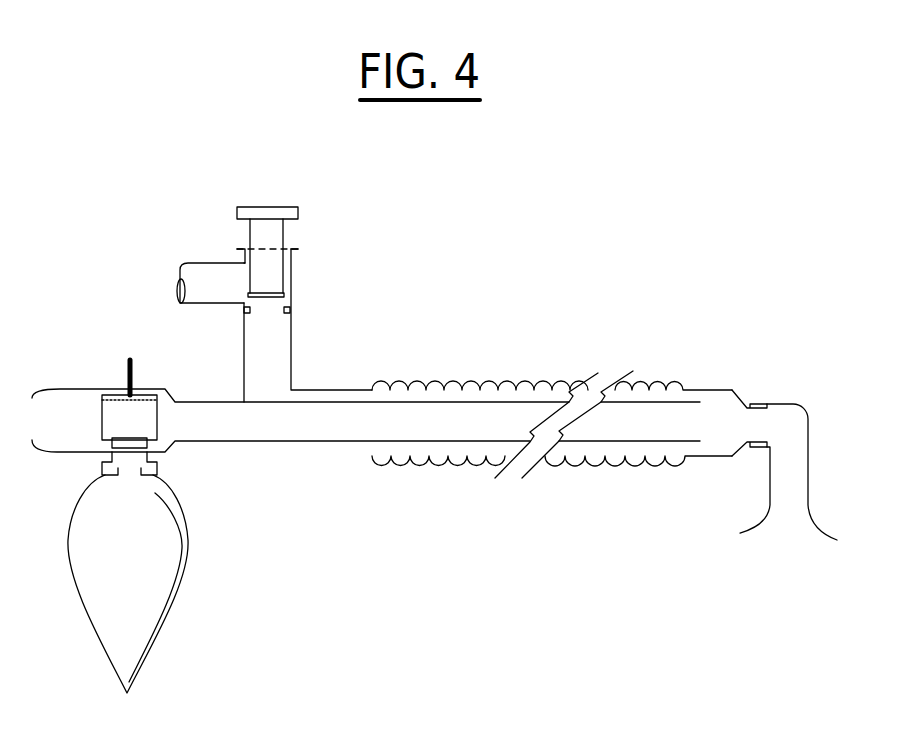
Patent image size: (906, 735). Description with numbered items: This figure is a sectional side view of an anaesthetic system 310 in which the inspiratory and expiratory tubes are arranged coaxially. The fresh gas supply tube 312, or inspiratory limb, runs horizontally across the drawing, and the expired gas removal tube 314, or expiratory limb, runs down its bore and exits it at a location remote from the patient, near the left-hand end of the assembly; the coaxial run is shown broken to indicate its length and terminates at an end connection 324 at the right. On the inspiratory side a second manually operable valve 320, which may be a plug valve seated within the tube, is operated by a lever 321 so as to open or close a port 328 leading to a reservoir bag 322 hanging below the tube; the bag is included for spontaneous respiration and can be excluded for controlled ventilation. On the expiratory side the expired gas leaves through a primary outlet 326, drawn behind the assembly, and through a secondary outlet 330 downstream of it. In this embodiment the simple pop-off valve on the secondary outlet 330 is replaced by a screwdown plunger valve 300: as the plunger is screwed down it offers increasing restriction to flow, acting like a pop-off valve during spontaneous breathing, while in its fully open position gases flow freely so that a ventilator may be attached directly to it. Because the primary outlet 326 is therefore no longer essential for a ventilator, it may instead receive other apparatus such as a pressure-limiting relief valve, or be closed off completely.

The screwdown plunger valve 300 is at (262, 297).
The anaesthetic system 310 is at (482, 500).
The fresh gas supply tube 312 is at (430, 412).
The expired gas removal tube 314 is at (417, 470).
The second manually operable valve 320 is at (101, 390).
The lever 321 is at (130, 357).
The reservoir bag 322 is at (158, 605).
The outlet 324 is at (783, 494).
The primary outlet 326 is at (296, 386).
The port 328 is at (127, 472).
The secondary outlet 330 is at (178, 287).